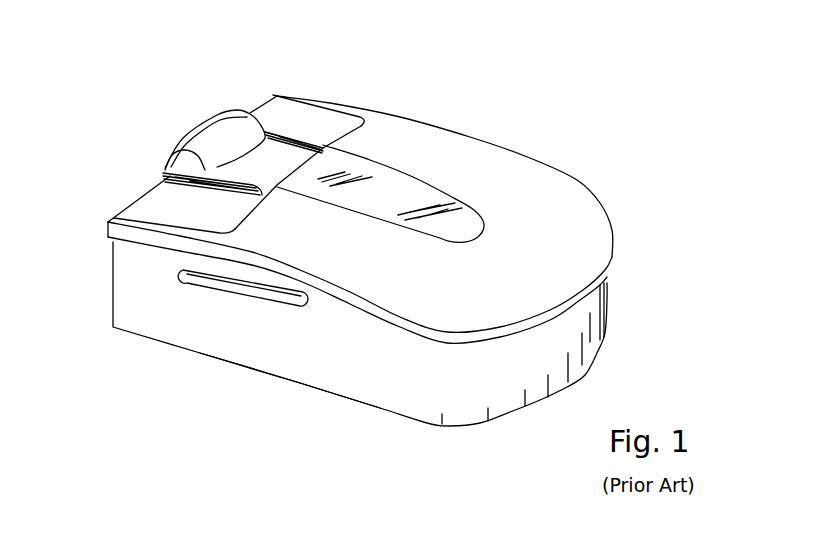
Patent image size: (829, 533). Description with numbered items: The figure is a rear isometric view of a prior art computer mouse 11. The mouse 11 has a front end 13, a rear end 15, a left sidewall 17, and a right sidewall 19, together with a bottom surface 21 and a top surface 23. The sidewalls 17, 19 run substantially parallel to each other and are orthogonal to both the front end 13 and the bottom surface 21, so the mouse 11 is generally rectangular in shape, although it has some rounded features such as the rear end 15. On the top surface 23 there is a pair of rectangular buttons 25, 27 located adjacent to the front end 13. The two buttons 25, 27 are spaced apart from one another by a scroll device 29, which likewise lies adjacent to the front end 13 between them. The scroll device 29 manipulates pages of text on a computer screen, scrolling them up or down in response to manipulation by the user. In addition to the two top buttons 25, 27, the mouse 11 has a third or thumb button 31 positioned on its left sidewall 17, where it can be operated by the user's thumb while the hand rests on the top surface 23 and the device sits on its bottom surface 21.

The computer mouse 11 is at (613, 93).
The front end 13 is at (112, 282).
The rear end 15 is at (573, 325).
The left sidewall 17 is at (317, 360).
The right sidewall 19 is at (488, 138).
The bottom surface 21 is at (208, 356).
The top surface 23 is at (565, 220).
The rectangular button 25 is at (145, 206).
The rectangular button 27 is at (312, 118).
The scroll device 29 is at (217, 142).
The thumb button 31 is at (197, 278).